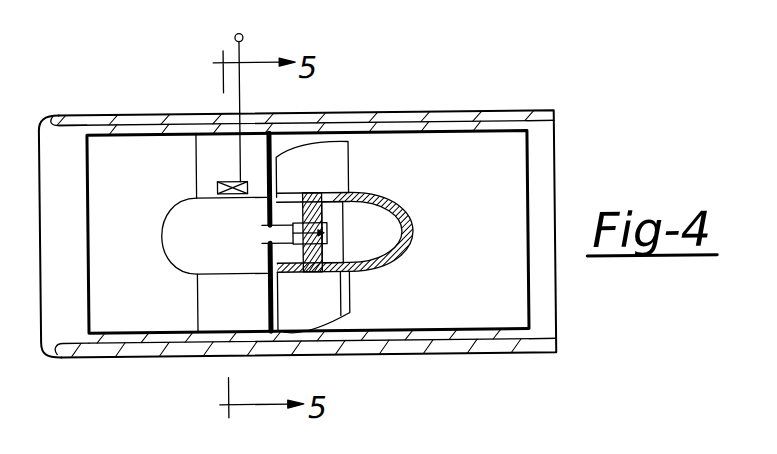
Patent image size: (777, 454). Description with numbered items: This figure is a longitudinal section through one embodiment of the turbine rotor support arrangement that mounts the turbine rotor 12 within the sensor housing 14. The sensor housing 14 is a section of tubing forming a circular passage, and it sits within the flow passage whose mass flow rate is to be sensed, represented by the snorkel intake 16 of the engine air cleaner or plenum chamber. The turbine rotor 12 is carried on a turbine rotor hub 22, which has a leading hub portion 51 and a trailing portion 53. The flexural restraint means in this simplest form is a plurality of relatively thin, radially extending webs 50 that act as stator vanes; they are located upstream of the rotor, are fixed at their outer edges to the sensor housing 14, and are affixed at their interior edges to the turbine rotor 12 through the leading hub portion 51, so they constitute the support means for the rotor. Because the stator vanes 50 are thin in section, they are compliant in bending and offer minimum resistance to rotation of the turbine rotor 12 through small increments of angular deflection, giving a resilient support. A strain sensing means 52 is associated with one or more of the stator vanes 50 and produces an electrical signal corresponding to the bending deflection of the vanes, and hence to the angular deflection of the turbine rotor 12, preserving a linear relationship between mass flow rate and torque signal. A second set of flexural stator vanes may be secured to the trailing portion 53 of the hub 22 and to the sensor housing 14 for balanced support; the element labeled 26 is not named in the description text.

The turbine rotor 12 is at (399, 358).
The sensor housing 14 is at (476, 128).
The snorkel intake 16 is at (420, 114).
The turbine rotor hub 22 is at (321, 301).
The hub 26 is at (336, 326).
The radially extending webs 50 is at (239, 313).
The leading hub portion 51 is at (218, 276).
The strain sensing means 52 is at (218, 186).
The trailing portion 53 is at (402, 256).